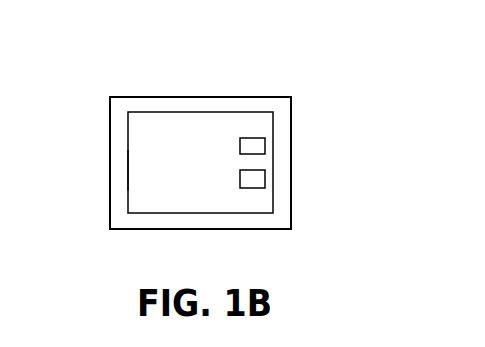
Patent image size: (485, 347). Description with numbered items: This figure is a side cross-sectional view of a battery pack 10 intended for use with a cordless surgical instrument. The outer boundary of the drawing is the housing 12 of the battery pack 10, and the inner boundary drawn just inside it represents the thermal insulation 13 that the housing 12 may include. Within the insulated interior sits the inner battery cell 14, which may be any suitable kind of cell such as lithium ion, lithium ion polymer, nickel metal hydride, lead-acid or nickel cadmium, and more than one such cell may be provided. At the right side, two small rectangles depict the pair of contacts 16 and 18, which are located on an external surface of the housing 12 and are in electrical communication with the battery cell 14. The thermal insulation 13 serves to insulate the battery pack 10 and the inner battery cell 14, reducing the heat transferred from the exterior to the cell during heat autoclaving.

The battery pack 10 is at (292, 66).
The housing 12 is at (125, 97).
The thermal insulation 13 is at (210, 105).
The inner battery cell 14 is at (138, 163).
The contact 16 is at (259, 145).
The contact 18 is at (259, 180).